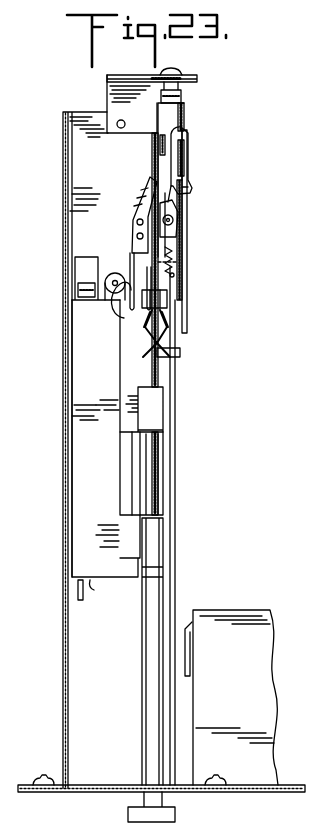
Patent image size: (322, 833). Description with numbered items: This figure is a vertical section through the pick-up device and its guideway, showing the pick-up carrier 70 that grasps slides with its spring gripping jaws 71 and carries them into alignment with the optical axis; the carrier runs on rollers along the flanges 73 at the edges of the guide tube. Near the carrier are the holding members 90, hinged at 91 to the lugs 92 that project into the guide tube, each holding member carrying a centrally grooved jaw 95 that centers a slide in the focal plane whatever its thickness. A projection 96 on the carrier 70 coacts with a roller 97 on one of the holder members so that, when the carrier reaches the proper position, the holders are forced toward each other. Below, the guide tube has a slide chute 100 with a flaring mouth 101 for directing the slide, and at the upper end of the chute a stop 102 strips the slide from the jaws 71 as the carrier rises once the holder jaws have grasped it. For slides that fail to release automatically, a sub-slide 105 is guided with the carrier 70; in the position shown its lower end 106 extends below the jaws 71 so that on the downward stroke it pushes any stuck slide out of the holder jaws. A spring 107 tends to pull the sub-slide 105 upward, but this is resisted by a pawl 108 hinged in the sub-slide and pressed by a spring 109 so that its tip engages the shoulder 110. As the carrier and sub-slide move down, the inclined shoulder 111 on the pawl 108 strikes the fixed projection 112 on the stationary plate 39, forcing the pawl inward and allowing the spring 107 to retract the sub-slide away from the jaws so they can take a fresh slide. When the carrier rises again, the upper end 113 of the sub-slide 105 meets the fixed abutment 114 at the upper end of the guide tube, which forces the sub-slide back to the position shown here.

The fixed abutment 114 is at (197, 80).
The upper end of slide 113 is at (183, 88).
The sub-slide 105 is at (184, 108).
The shoulder 110 is at (185, 124).
The pawl 108 is at (181, 138).
The inclined shoulder 111 is at (186, 184).
The spring 109 is at (179, 207).
The pick-up carrier 70 is at (153, 175).
The spring 107 is at (184, 253).
The projection 96 is at (130, 275).
The hinge 91 is at (86, 284).
The lugs 92 is at (103, 302).
The roller 97 is at (127, 309).
The holding members 90 is at (106, 461).
The stop 102 is at (150, 428).
The spring gripping jaws 71 is at (169, 343).
The lower end of slide 106 is at (174, 358).
The flanges 73 is at (176, 448).
The centrally grooved jaw 95 is at (155, 484).
The slide chute 100 is at (152, 598).
The flaring mouth 101 is at (163, 812).
The stationary plate 39 is at (258, 638).
The fixed projection 112 is at (190, 659).